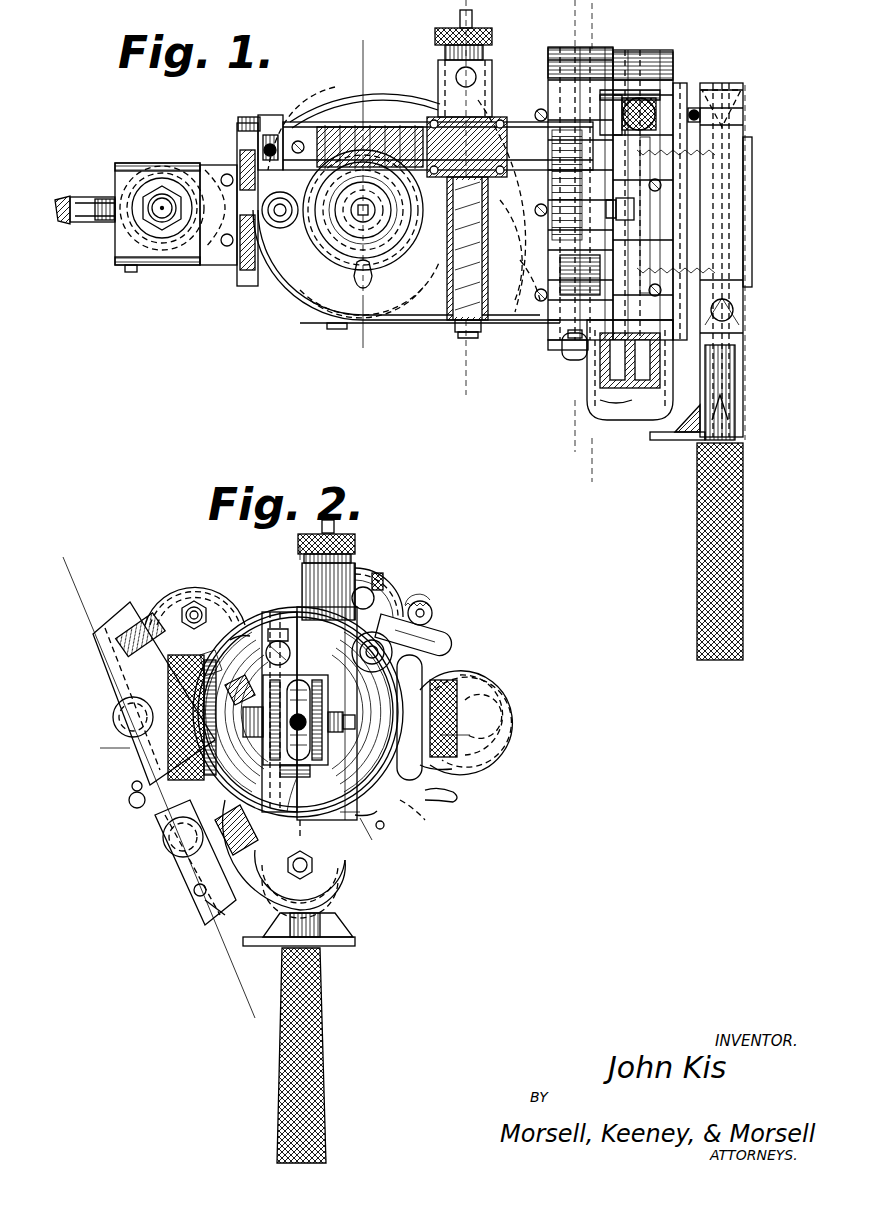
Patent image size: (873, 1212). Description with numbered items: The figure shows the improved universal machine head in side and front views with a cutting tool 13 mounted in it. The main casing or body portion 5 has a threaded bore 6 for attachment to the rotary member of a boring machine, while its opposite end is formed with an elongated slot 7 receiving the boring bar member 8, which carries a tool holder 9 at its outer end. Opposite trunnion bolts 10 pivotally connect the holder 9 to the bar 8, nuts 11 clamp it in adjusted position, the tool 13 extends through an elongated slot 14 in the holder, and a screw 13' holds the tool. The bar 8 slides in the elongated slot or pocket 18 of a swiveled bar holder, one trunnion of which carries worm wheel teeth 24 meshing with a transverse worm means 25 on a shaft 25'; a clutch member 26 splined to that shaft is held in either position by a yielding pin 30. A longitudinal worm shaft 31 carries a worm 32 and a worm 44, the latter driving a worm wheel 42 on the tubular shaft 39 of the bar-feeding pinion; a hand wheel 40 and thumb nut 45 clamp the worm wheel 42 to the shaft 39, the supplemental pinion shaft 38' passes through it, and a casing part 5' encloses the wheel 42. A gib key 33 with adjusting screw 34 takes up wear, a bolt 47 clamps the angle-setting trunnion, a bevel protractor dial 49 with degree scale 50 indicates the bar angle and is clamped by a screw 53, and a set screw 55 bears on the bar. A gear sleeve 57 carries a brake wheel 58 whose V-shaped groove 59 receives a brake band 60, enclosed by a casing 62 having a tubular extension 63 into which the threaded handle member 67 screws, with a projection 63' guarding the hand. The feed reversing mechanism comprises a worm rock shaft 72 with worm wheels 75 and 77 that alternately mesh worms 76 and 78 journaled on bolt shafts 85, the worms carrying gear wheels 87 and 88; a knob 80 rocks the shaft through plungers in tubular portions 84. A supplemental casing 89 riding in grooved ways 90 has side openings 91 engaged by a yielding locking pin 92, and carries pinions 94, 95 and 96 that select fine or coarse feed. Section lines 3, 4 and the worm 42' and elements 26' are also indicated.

In FIG. 2, the section line 3- 3 is at (311, 1186).
In FIG. 2, the section line 4- 4 is at (545, 735).
In FIG. 1, the main casing or body portion 5 is at (357, 215).
In FIG. 2, the main casing or body portion 5 is at (376, 825).
In FIG. 1, the casing part 5' is at (741, 277).
In FIG. 1, the threaded bore 6 is at (459, 387).
In FIG. 1, the elongated slot 7 is at (548, 438).
In FIG. 2, the elongated slot 7 is at (356, 829).
In FIG. 1, the boring bar member 8 is at (585, 469).
In FIG. 1, the tool holder 9 is at (209, 162).
In FIG. 2, the tool holder 9 is at (306, 762).
In FIG. 1, the trunnion bolts 10 is at (164, 218).
In FIG. 2, the trunnion bolts 10 is at (388, 820).
In FIG. 1, the nuts 11 is at (173, 226).
In FIG. 2, the nuts 11 is at (235, 1003).
In FIG. 1, the tool 13 is at (85, 197).
In FIG. 2, the tool 13 is at (307, 718).
In FIG. 1, the screw 13' is at (121, 285).
In FIG. 2, the screw 13' is at (283, 823).
In FIG. 2, the elongated slot 14 is at (322, 735).
In FIG. 1, the elongated slot or pocket 18 is at (775, 481).
In FIG. 1, the worm wheel teeth 24 is at (395, 288).
In FIG. 1, the transverse worm means 25 is at (487, 248).
In FIG. 1, the shaft 25' is at (479, 338).
In FIG. 1, the clutch member 26 is at (480, 42).
In FIG. 2, the clutch member 26 is at (350, 548).
In FIG. 1, the knob stem 26' is at (485, 17).
In FIG. 2, the knob stem 26' is at (358, 523).
In FIG. 1, the yielding pin 30 is at (477, 77).
In FIG. 2, the yielding pin 30 is at (377, 599).
In FIG. 1, the worm shaft 31 is at (420, 125).
In FIG. 2, the worm shaft 31 is at (421, 651).
In FIG. 1, the worm 32 is at (499, 151).
In FIG. 1, the gib key 33 is at (244, 122).
In FIG. 2, the gib key 33 is at (355, 654).
In FIG. 1, the adjusting screw 34 is at (244, 130).
In FIG. 1, the shaft 38' is at (329, 232).
In FIG. 1, the tubular shaft 39 is at (347, 212).
In FIG. 1, the hand wheel 40 is at (355, 269).
In FIG. 2, the hand wheel 40 is at (456, 797).
In FIG. 2, the worm wheel 42 is at (425, 811).
In FIG. 1, the housing rim 42' is at (370, 280).
In FIG. 1, the worm 44 is at (530, 204).
In FIG. 1, the thumb nut 45 is at (372, 262).
In FIG. 2, the thumb nut 45 is at (474, 769).
In FIG. 1, the bolt 47 is at (280, 222).
In FIG. 2, the bolt 47 is at (365, 735).
In FIG. 2, the bevel protractor dial 49 is at (180, 810).
In FIG. 2, the degree scale 50 is at (210, 651).
In FIG. 2, the screw 53 is at (170, 668).
In FIG. 1, the set screw 55 is at (336, 330).
In FIG. 1, the gear sleeve 57 is at (695, 110).
In FIG. 1, the brake wheel 58 is at (743, 122).
In FIG. 1, the V-shaped groove 59 is at (745, 106).
In FIG. 1, the brake band 60 is at (745, 91).
In FIG. 1, the casing 62 is at (733, 140).
In FIG. 1, the tubular extension 63 is at (746, 392).
In FIG. 2, the tubular extension 63 is at (319, 920).
In FIG. 1, the projection 63' is at (677, 435).
In FIG. 2, the projection 63' is at (312, 952).
In FIG. 1, the handle member 67 is at (697, 554).
In FIG. 2, the handle member 67 is at (285, 1076).
In FIG. 2, the worm rock shaft 72 is at (150, 812).
In FIG. 2, the worm wheel 75 is at (290, 880).
In FIG. 1, the worm 76 is at (588, 387).
In FIG. 2, the worm 76 is at (345, 895).
In FIG. 2, the worm wheel 77 is at (176, 631).
In FIG. 1, the worm 78 is at (620, 65).
In FIG. 2, the worm 78 is at (159, 565).
In FIG. 2, the projecting knob 80 is at (130, 806).
In FIG. 1, the tubular portions 84 is at (548, 322).
In FIG. 2, the tubular portions 84 is at (170, 850).
In FIG. 1, the bolt shafts 85 is at (566, 357).
In FIG. 2, the bolt shafts 85 is at (315, 865).
In FIG. 1, the gear wheel 87 is at (648, 397).
In FIG. 2, the gear wheel 87 is at (350, 872).
In FIG. 1, the gear wheel 88 is at (648, 58).
In FIG. 2, the gear wheel 88 is at (214, 565).
In FIG. 1, the supplemental casing 89 is at (606, 239).
In FIG. 2, the supplemental casing 89 is at (485, 680).
In FIG. 1, the grooved ways 90 is at (560, 262).
In FIG. 2, the grooved ways 90 is at (445, 679).
In FIG. 2, the side openings 91 is at (430, 614).
In FIG. 1, the yielding locking pin 92 is at (648, 140).
In FIG. 2, the yielding locking pin 92 is at (433, 606).
In FIG. 2, the pinion 94 is at (395, 566).
In FIG. 2, the pinion 95 is at (499, 706).
In FIG. 1, the pinion 96 is at (530, 260).
In FIG. 2, the pinion 96 is at (497, 690).